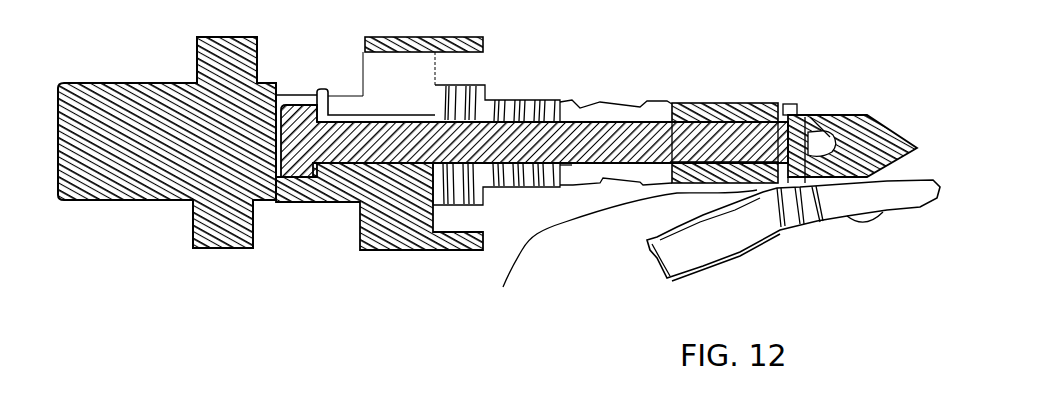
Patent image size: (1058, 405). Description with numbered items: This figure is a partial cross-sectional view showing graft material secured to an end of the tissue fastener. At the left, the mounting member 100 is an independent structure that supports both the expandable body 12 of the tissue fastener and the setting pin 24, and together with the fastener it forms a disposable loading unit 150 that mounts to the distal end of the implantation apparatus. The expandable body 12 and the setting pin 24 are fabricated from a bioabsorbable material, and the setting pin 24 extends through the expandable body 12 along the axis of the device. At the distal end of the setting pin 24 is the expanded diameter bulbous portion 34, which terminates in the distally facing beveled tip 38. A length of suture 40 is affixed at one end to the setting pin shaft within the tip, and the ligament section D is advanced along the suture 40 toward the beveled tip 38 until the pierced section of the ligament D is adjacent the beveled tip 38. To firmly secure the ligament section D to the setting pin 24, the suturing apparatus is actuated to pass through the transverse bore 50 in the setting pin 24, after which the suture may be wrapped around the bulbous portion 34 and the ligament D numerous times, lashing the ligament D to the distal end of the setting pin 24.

The mounting member 100 is at (110, 200).
The expandable body 12 is at (497, 85).
The setting pin 24 is at (577, 120).
The bulbous portion 34 is at (827, 133).
The beveled tip 38 is at (887, 120).
The transverse bore 50 is at (833, 133).
The suture 40 is at (490, 297).
The ligament section D is at (708, 267).
The disposable loading unit 150 is at (367, 307).